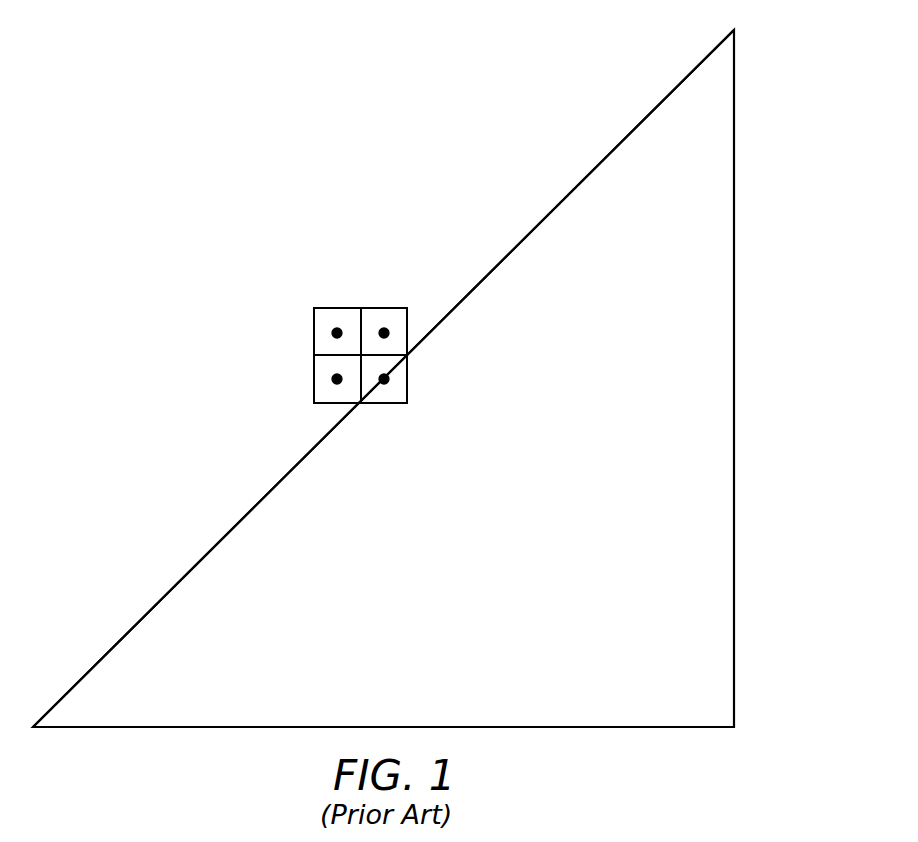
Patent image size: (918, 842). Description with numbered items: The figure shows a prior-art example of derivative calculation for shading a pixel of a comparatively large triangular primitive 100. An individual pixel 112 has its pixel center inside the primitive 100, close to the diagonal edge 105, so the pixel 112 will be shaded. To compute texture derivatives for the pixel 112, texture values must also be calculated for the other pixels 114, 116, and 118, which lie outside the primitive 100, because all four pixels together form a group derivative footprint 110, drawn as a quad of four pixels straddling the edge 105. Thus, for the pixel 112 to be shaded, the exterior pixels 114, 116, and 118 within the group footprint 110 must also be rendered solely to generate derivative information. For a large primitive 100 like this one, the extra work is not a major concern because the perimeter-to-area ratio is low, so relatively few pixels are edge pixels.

The primitive 100 is at (438, 378).
The edge 105 is at (383, 378).
The group derivative footprint 110 is at (384, 301).
The pixel 112 is at (439, 391).
The pixel 114 is at (272, 395).
The pixel 116 is at (271, 312).
The pixel 118 is at (423, 297).